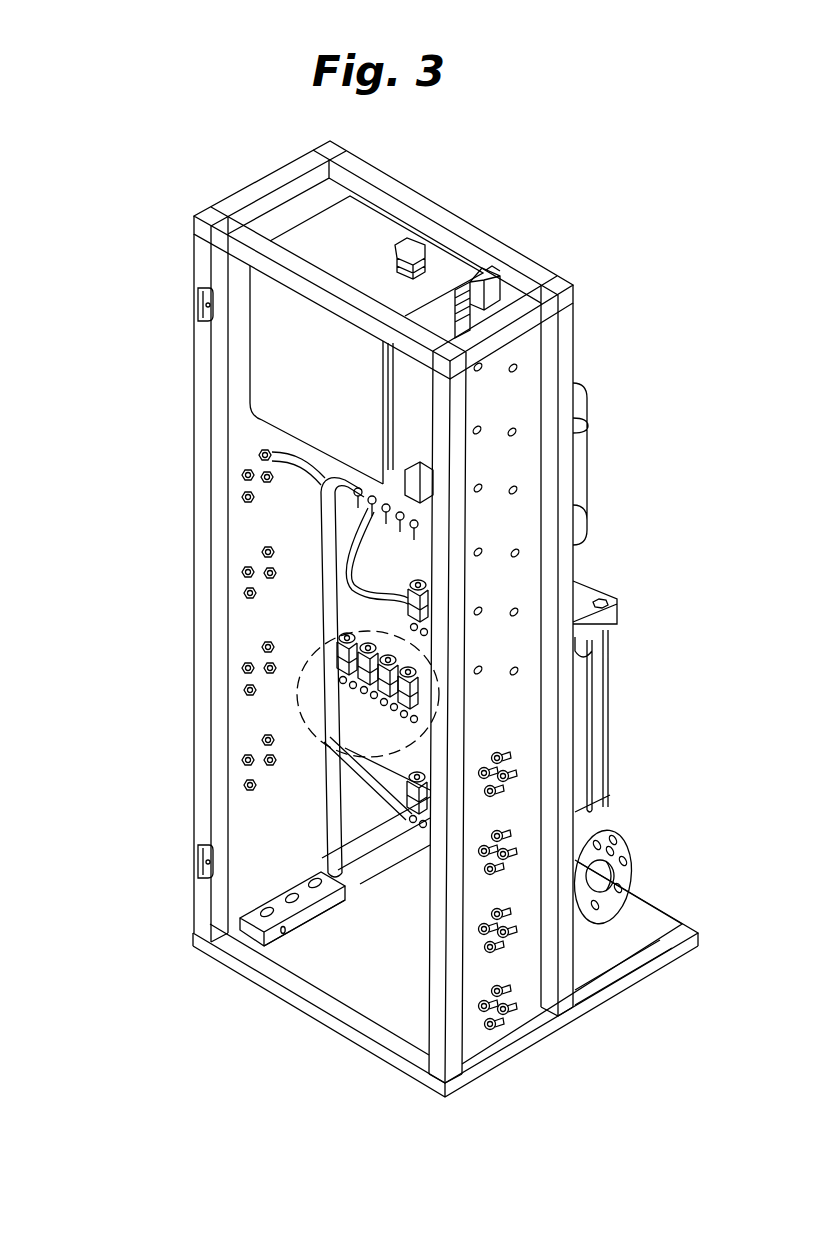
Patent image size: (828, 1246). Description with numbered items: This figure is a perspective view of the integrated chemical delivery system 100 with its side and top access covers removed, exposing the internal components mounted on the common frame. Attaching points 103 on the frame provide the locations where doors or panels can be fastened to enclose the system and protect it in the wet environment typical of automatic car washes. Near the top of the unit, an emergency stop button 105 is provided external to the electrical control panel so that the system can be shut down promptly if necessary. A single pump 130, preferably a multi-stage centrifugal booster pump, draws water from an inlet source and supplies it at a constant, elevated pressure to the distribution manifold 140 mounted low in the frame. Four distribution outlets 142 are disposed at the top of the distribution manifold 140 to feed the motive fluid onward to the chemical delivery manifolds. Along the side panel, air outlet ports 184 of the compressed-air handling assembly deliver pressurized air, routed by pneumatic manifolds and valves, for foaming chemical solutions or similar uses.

The integrated chemical delivery system 100 is at (155, 186).
The attaching points 103 is at (199, 306).
The emergency stop button 105 is at (410, 248).
The pump 130 is at (606, 830).
The distribution manifold 140 is at (284, 936).
The distribution outlets 142 is at (320, 912).
The air outlet ports 184 is at (522, 372).